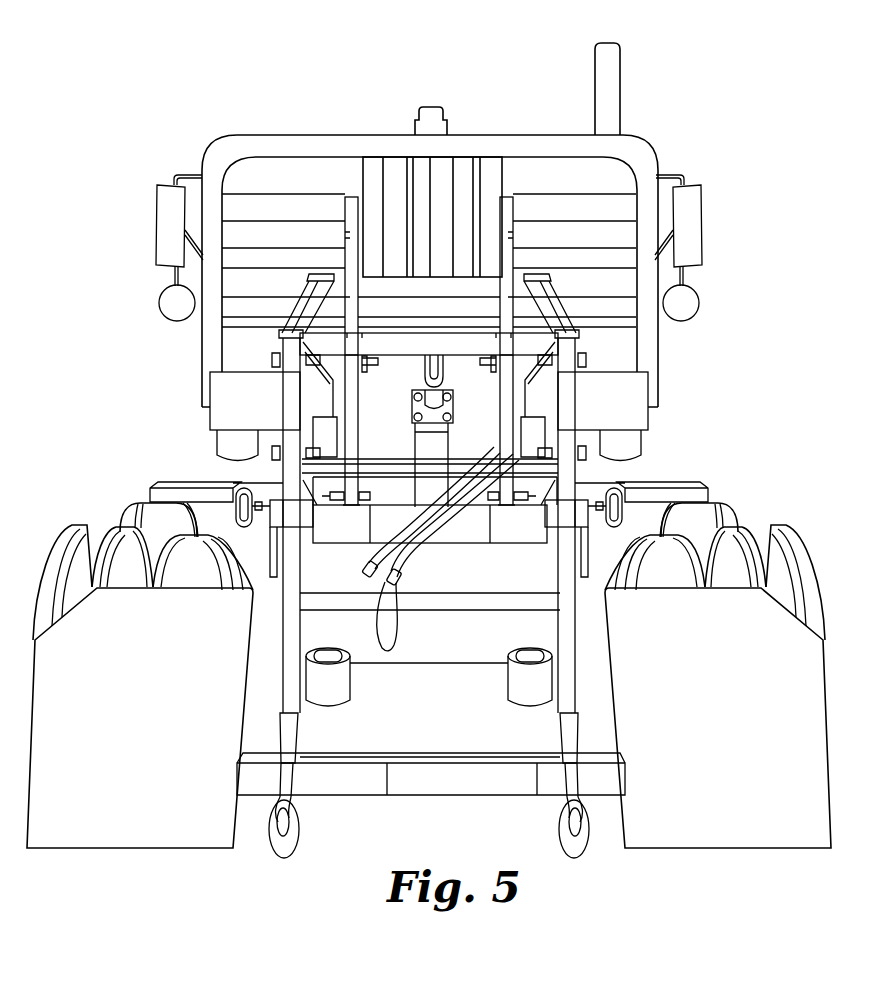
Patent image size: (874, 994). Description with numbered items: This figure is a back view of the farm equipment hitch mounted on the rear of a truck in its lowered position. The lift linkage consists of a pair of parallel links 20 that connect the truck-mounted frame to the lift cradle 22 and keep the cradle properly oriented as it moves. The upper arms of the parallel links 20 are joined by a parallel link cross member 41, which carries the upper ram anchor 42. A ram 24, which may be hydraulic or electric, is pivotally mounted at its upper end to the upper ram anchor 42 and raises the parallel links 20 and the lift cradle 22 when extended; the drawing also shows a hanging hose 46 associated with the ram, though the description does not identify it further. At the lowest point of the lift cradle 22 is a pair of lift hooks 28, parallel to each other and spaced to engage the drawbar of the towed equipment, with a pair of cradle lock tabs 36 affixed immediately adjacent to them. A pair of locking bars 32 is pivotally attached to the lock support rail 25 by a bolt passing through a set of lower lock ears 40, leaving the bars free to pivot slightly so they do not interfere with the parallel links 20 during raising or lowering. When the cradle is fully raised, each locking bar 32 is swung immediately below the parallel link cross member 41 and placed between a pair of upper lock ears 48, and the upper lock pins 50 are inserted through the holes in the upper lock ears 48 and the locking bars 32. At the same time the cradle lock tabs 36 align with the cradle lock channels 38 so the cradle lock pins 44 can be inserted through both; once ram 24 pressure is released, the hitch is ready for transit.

The parallel links 20 is at (310, 300).
The lift cradle 22 is at (292, 400).
The ram 24 is at (424, 398).
The lock support rail 25 is at (511, 530).
The lift hooks 28 is at (567, 843).
The locking bars 32 is at (345, 204).
The cradle lock tabs 36 is at (288, 727).
The cradle lock channels 38 is at (307, 528).
The lower lock ears 40 is at (365, 513).
The parallel link cross member 41 is at (328, 348).
The upper ram anchor 42 is at (430, 330).
The cradle lock pins 44 is at (238, 492).
The hose 46 is at (392, 642).
The upper lock ears 48 is at (366, 374).
The upper lock pins 50 is at (370, 364).